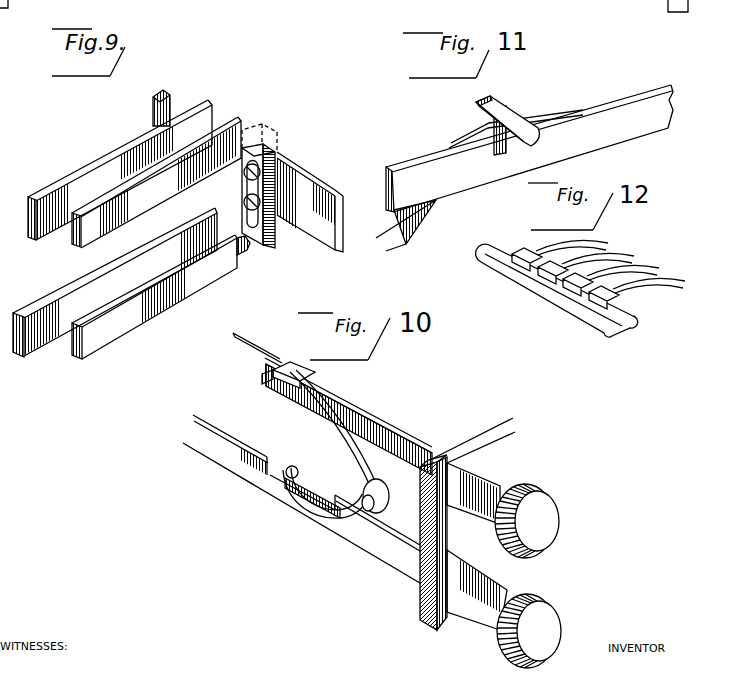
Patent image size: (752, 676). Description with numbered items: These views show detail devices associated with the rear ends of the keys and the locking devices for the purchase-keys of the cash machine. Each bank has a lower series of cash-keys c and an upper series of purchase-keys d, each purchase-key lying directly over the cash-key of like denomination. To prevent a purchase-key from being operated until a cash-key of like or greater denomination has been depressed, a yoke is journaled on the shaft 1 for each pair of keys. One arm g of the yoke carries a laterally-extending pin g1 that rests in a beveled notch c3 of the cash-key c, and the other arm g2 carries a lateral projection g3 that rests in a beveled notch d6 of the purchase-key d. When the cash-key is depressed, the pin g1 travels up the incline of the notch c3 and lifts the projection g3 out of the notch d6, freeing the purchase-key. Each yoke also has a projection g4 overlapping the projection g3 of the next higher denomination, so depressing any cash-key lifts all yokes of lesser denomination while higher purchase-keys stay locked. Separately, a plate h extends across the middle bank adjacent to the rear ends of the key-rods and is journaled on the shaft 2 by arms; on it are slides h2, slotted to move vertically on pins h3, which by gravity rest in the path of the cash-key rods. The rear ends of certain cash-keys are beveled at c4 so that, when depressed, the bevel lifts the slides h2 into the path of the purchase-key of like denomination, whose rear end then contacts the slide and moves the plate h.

In FIG. 9, the purchase-key d is at (146, 175).
In FIG. 10, the purchase-key d is at (362, 440).
In FIG. 11, the purchase-key d is at (594, 122).
In FIG. 9, the cash-key c is at (90, 343).
In FIG. 10, the cash-key c is at (238, 463).
In FIG. 10, the beveled notch c3 is at (303, 482).
In FIG. 9, the bevel c4 is at (247, 252).
In FIG. 10, the beveled notch d6 is at (285, 358).
In FIG. 9, the plate h is at (322, 193).
In FIG. 9, the slides h2 is at (278, 170).
In FIG. 9, the pins h3 is at (242, 192).
In FIG. 10, the yoke arm g is at (317, 513).
In FIG. 10, the pin g1 is at (307, 455).
In FIG. 10, the yoke arm g2 is at (362, 436).
In FIG. 11, the yoke arm g2 is at (423, 222).
In FIG. 12, the yoke arm g2 is at (593, 272).
In FIG. 10, the lateral projection g3 is at (307, 367).
In FIG. 11, the lateral projection g3 is at (526, 126).
In FIG. 12, the lateral projection g3 is at (516, 276).
In FIG. 10, the projection g4 is at (268, 376).
In FIG. 11, the projection g4 is at (480, 128).
In FIG. 12, the projection g4 is at (576, 310).
In FIG. 10, the shaft 1 is at (367, 513).
In FIG. 10, the shaft 2 is at (528, 576).